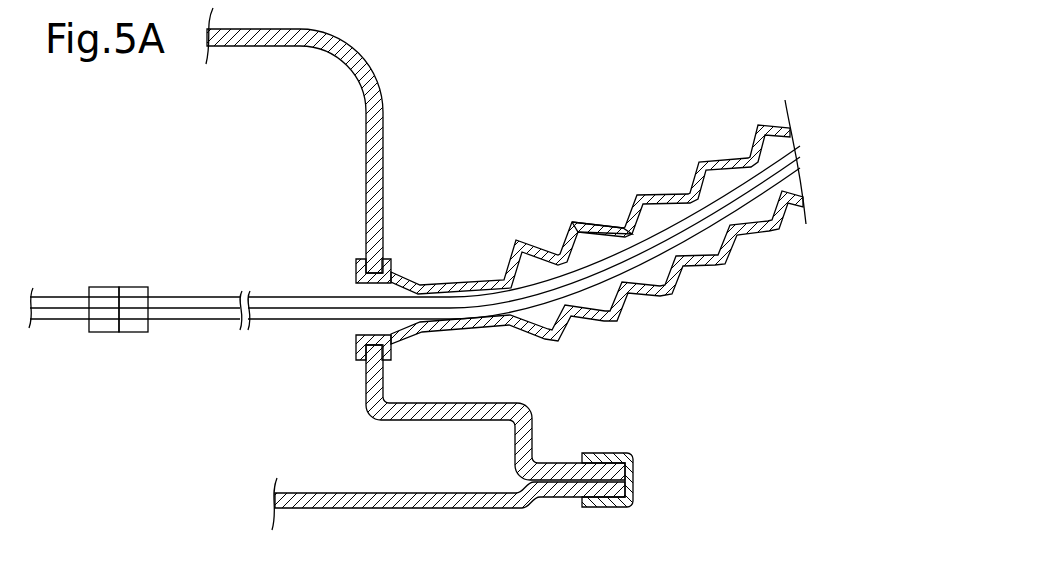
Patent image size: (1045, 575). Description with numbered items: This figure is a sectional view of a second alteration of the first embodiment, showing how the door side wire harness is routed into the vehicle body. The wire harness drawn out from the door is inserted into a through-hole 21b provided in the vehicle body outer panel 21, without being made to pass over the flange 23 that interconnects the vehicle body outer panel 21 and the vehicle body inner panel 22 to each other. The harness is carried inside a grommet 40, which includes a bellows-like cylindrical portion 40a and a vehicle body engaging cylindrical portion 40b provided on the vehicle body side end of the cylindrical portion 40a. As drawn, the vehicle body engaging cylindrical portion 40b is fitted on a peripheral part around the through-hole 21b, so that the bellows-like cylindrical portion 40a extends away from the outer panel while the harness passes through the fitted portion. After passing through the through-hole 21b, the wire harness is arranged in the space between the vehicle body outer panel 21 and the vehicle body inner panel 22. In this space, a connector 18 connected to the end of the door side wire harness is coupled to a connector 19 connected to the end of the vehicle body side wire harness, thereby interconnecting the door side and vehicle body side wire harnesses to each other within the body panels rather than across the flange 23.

The vehicle body outer panel 21 is at (362, 60).
The through-hole 21b is at (366, 349).
The vehicle body inner panel 22 is at (461, 508).
The flange 23 is at (580, 497).
The grommet 40 is at (637, 185).
The bellows-like cylindrical portion 40a is at (602, 226).
The vehicle body engaging cylindrical portion 40b is at (403, 280).
The connector 19 is at (98, 288).
The connector 18 is at (131, 288).